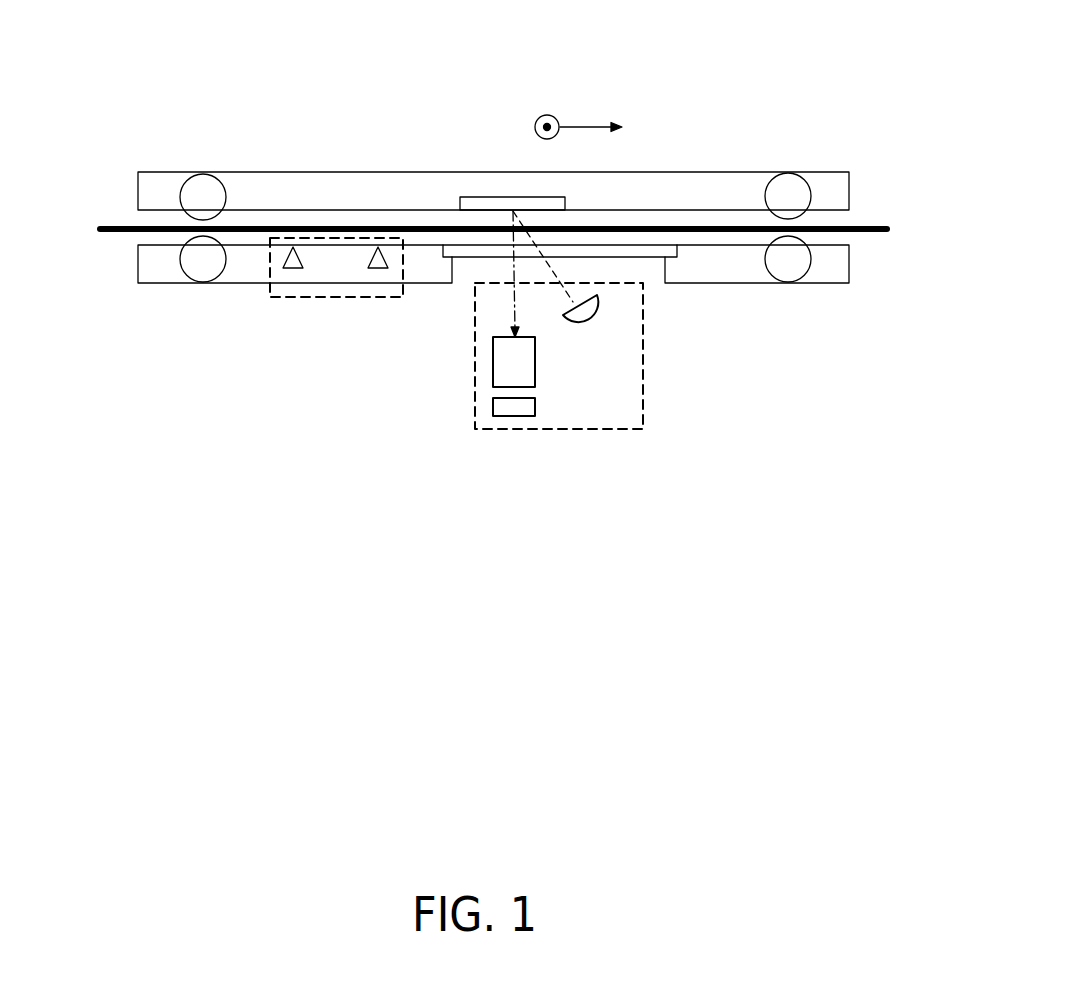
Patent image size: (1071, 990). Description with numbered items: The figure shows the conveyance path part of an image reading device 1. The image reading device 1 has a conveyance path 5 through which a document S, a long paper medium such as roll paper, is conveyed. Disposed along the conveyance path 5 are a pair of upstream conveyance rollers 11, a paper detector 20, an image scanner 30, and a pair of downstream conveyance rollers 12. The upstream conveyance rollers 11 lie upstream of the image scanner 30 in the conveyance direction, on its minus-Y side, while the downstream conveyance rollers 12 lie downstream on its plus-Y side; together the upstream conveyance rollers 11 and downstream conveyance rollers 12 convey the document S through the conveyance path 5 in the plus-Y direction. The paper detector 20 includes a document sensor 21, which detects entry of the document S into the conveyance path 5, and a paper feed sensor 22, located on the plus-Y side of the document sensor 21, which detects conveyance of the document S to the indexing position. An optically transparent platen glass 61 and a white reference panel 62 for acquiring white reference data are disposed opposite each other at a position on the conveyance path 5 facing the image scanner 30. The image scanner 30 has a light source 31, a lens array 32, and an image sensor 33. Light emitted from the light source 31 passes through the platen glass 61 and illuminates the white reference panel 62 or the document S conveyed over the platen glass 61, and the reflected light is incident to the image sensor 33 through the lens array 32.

The image reading device 1 is at (748, 66).
The conveyance path 5 is at (119, 212).
The document S is at (105, 235).
The upstream conveyance rollers 11 is at (183, 189).
The downstream conveyance rollers 12 is at (765, 190).
The paper detector 20 is at (270, 262).
The document sensor 21 is at (293, 269).
The paper feed sensor 22 is at (378, 269).
The image scanner 30 is at (475, 395).
The light source 31 is at (603, 312).
The lens array 32 is at (535, 362).
The image sensor 33 is at (535, 407).
The platen glass 61 is at (467, 258).
The white reference panel 62 is at (465, 196).